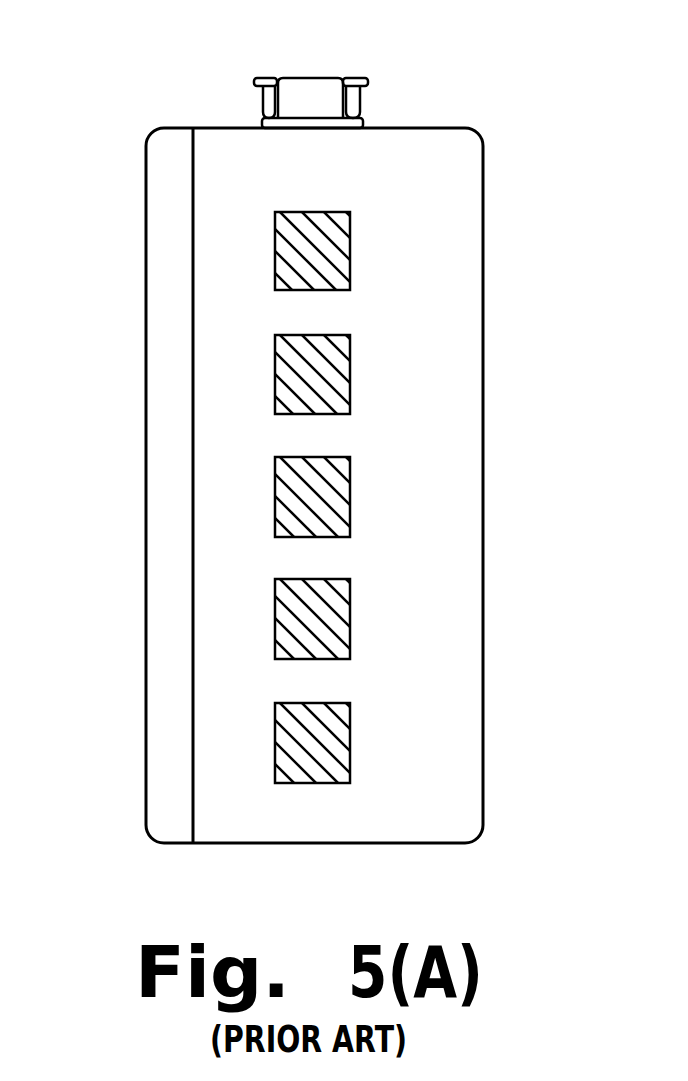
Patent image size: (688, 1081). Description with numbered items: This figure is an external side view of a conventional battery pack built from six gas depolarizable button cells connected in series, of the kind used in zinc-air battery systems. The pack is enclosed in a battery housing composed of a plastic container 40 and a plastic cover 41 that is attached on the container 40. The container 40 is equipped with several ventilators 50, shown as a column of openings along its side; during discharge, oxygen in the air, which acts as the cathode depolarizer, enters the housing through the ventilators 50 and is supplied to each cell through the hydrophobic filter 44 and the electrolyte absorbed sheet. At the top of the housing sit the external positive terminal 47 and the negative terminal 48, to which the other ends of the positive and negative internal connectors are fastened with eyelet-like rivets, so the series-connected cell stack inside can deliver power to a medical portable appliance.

The plastic container 40 is at (418, 148).
The plastic cover 41 is at (163, 223).
The hydrophobic filter 44 is at (333, 368).
The external positive terminal 47 is at (317, 97).
The negative terminal 48 is at (258, 82).
The ventilators 50 is at (343, 483).